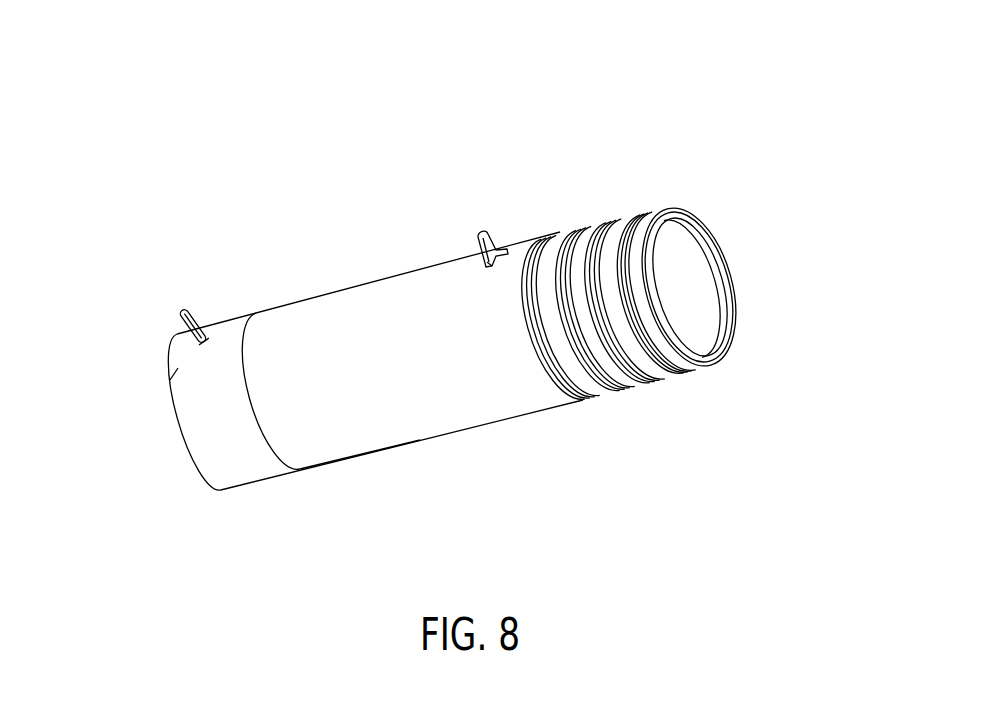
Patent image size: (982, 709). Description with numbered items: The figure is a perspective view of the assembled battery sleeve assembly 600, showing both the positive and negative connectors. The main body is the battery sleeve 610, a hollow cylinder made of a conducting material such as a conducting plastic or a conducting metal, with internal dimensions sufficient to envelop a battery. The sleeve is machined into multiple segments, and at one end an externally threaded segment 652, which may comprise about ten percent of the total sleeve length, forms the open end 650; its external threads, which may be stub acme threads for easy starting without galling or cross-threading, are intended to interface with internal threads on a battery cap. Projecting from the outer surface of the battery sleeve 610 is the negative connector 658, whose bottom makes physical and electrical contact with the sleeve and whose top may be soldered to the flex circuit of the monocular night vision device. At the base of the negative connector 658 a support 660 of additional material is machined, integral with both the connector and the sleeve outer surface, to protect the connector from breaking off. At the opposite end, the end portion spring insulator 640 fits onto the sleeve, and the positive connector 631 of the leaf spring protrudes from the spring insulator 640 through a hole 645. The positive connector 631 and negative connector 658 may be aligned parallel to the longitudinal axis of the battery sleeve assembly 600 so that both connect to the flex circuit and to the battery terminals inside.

The battery sleeve assembly 600 is at (723, 166).
The battery sleeve 610 is at (422, 442).
The positive connector 631 is at (197, 310).
The end portion spring insulator 640 is at (250, 473).
The hole 645 is at (192, 347).
The open end 650 is at (700, 281).
The segment 652 is at (683, 378).
The negative connector 658 is at (465, 206).
The support 660 is at (493, 270).